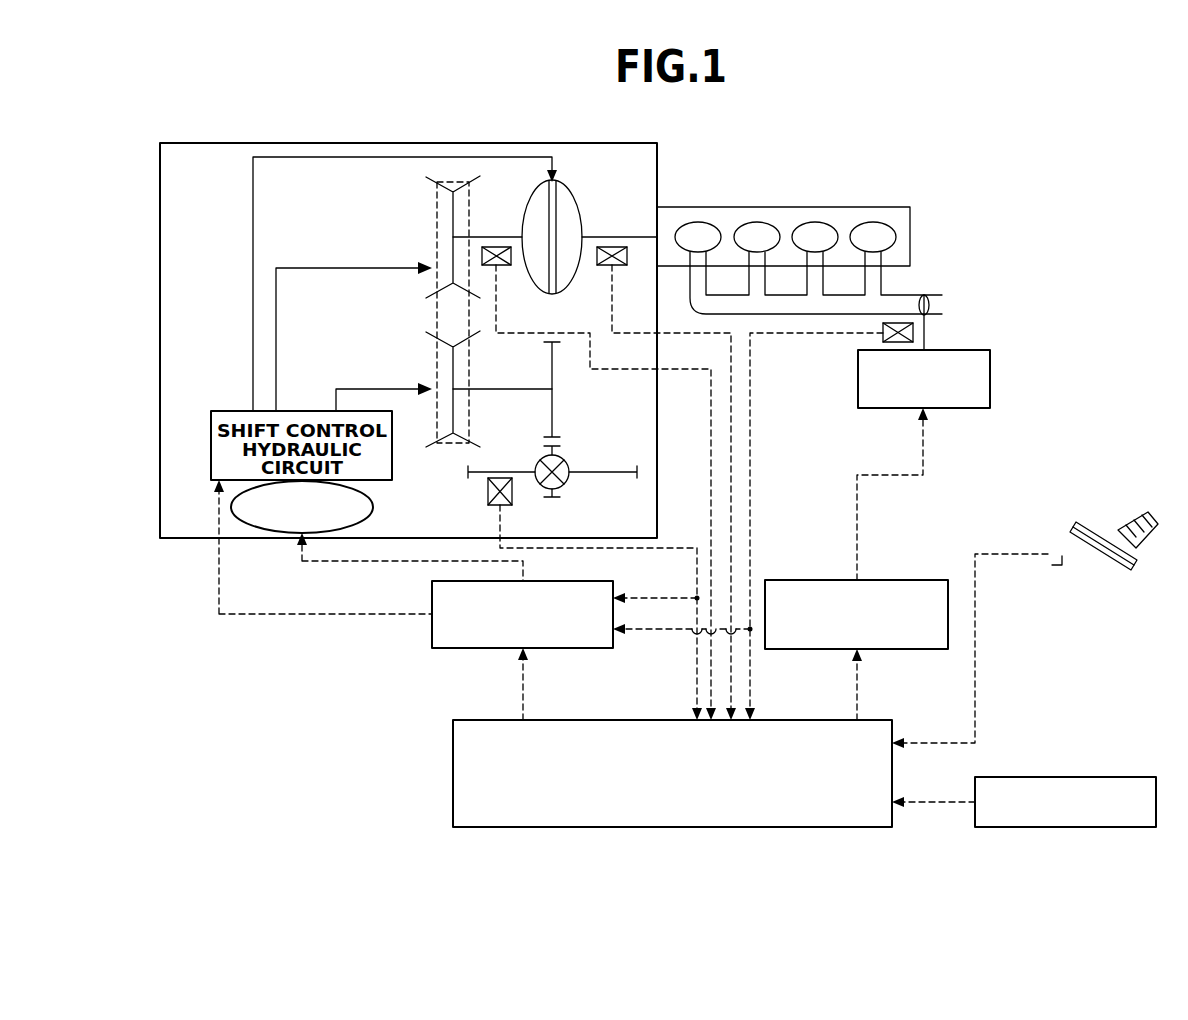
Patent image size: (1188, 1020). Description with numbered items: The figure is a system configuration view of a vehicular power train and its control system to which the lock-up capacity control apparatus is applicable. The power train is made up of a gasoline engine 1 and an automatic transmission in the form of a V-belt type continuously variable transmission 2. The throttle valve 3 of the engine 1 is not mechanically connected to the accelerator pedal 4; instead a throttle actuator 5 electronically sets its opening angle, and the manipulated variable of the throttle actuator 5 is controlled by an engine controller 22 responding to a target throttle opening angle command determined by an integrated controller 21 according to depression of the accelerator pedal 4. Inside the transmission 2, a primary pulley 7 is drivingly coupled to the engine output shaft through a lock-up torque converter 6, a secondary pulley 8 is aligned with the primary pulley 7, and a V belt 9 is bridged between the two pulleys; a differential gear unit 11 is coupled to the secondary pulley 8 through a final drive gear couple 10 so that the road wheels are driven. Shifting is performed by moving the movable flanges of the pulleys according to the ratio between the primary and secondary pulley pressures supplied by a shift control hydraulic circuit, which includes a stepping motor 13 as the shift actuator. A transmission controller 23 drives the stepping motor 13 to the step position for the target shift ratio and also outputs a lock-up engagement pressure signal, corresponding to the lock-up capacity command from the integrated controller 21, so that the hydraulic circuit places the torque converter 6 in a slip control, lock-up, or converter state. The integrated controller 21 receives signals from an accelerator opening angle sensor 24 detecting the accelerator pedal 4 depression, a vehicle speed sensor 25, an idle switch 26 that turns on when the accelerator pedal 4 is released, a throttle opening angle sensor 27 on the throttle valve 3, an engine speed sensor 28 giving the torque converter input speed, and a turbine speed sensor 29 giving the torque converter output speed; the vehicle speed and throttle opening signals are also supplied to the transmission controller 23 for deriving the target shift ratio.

The engine 1 is at (810, 207).
The continuously variable transmission 2 is at (160, 250).
The throttle valve 3 is at (935, 304).
The accelerator pedal 4 is at (1080, 522).
The throttle actuator 5 is at (990, 375).
The lock-up torque converter 6 is at (580, 207).
The primary pulley 7 is at (426, 180).
The secondary pulley 8 is at (426, 337).
The V belt 9 is at (437, 313).
The final drive gear couple 10 is at (554, 410).
The differential gear unit 11 is at (536, 464).
The stepping motor 13 is at (373, 509).
The integrated controller 21 is at (453, 775).
The engine controller 22 is at (812, 580).
The transmission controller 23 is at (432, 636).
The accelerator opening angle sensor 24 is at (1062, 556).
The vehicle speed sensor 25 is at (488, 490).
The idle switch 26 is at (1082, 777).
The throttle opening angle sensor 27 is at (883, 336).
The engine speed sensor 28 is at (611, 267).
The turbine speed sensor 29 is at (498, 267).